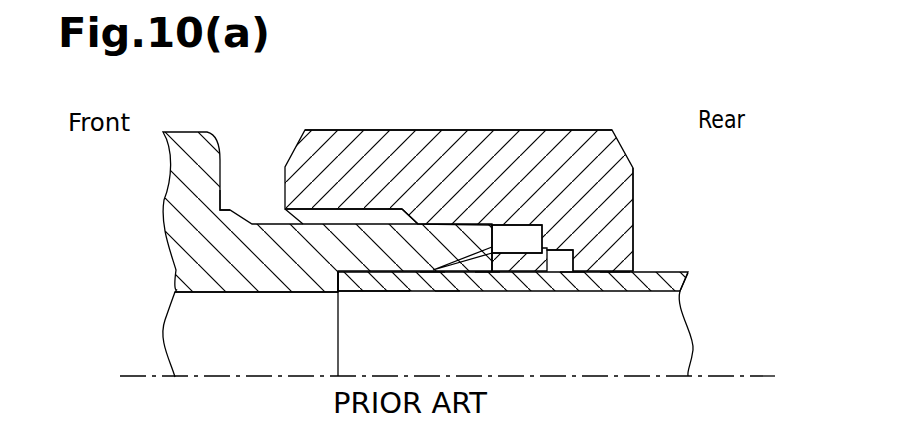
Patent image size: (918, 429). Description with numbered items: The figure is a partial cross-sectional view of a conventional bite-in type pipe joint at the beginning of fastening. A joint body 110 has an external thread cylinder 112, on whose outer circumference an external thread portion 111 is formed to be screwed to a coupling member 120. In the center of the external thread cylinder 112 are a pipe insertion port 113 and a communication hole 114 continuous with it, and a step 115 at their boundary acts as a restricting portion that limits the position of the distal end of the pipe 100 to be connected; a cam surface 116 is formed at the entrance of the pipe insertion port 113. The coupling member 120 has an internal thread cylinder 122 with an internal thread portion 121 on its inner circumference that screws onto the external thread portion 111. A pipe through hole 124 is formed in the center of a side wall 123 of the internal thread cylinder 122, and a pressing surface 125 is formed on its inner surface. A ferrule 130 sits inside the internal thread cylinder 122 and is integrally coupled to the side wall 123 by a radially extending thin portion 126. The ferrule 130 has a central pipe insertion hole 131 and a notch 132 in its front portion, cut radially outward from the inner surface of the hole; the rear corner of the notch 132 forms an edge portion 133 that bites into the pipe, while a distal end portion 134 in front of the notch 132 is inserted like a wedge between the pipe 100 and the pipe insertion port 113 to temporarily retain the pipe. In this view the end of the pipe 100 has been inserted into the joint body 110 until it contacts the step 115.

The pipe 100 is at (670, 271).
The joint body 110 is at (185, 128).
The external thread portion 111 is at (328, 208).
The external thread cylinder 112 is at (245, 209).
The pipe insertion port 113 is at (372, 292).
The communication hole 114 is at (254, 293).
The step 115 is at (343, 293).
The cam surface 116 is at (477, 258).
The coupling member 120 is at (590, 121).
The internal thread portion 121 is at (378, 226).
The internal thread cylinder 122 is at (496, 131).
The side wall 123 is at (634, 205).
The pipe through hole 124 is at (615, 273).
The pressing surface 125 is at (572, 273).
The thin portion 126 is at (547, 248).
The ferrule 130 is at (528, 278).
The pipe insertion hole 131 is at (487, 273).
The notch 132 is at (433, 273).
The edge portion 133 is at (445, 274).
The distal end portion 134 is at (434, 269).